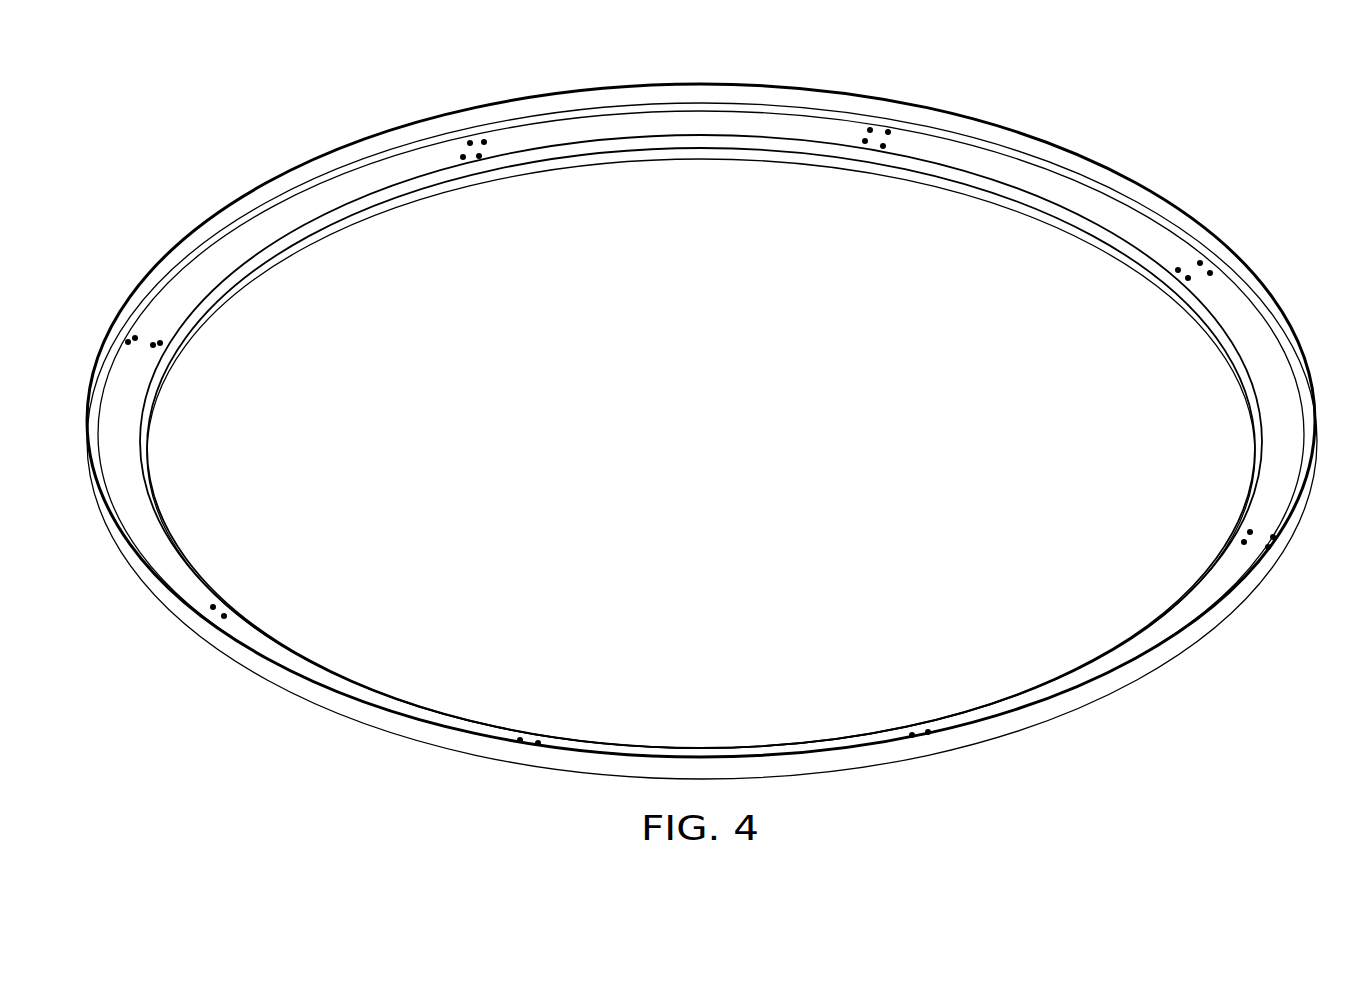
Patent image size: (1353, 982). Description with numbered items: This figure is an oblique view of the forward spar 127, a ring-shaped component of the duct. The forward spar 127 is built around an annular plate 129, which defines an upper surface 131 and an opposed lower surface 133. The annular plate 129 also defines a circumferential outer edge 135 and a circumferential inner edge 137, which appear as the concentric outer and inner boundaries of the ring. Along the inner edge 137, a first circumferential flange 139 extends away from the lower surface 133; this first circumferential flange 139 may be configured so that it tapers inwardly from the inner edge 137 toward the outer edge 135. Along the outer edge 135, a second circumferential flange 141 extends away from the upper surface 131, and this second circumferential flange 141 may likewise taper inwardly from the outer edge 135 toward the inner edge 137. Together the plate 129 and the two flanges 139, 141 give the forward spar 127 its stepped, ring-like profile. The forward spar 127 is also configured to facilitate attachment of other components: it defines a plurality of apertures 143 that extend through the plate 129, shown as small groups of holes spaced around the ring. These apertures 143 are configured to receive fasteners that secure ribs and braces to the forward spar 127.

The forward spar 127 is at (1006, 87).
The annular plate 129 is at (262, 225).
The upper surface 131 is at (318, 677).
The lower surface 133 is at (283, 690).
The circumferential outer edge 135 is at (350, 167).
The circumferential inner edge 137 is at (315, 225).
The first circumferential flange 139 is at (207, 320).
The second circumferential flange 141 is at (195, 238).
The apertures 143 is at (863, 140).